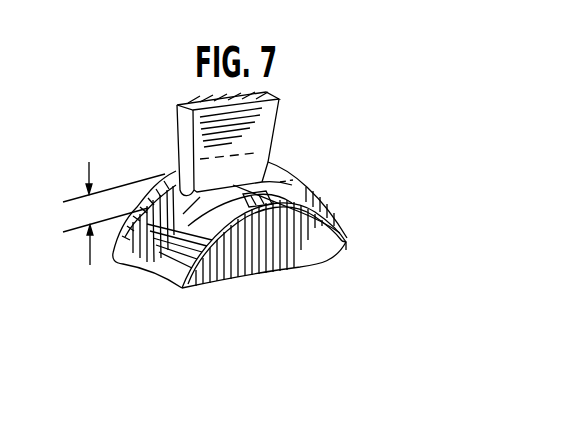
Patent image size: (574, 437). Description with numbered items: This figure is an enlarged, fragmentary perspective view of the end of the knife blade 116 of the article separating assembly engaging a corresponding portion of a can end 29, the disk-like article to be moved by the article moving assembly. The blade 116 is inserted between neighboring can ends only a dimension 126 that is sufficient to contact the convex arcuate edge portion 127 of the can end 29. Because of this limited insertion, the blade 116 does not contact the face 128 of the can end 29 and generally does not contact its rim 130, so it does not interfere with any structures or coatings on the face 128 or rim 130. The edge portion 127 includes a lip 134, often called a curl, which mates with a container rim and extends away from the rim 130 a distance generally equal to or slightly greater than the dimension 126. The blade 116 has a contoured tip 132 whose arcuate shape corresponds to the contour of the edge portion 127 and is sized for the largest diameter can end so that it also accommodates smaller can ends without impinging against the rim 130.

The can end 29 is at (348, 248).
The blade 116 is at (176, 136).
The dimension 126 is at (85, 208).
The edge portion 127 is at (308, 170).
The face 128 is at (296, 265).
The rim 130 is at (175, 273).
The contoured tip 132 is at (268, 205).
The lip 134 is at (268, 163).